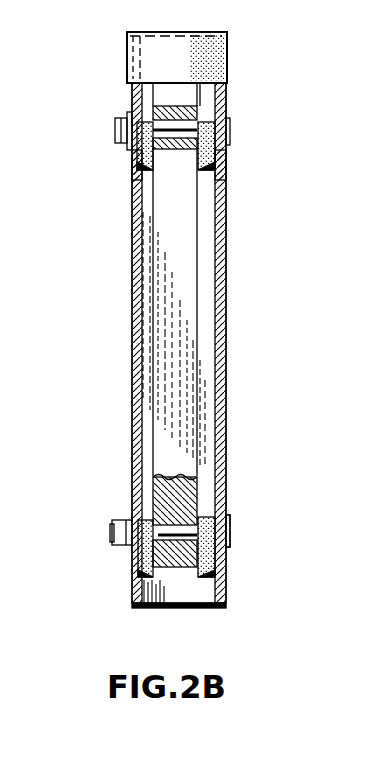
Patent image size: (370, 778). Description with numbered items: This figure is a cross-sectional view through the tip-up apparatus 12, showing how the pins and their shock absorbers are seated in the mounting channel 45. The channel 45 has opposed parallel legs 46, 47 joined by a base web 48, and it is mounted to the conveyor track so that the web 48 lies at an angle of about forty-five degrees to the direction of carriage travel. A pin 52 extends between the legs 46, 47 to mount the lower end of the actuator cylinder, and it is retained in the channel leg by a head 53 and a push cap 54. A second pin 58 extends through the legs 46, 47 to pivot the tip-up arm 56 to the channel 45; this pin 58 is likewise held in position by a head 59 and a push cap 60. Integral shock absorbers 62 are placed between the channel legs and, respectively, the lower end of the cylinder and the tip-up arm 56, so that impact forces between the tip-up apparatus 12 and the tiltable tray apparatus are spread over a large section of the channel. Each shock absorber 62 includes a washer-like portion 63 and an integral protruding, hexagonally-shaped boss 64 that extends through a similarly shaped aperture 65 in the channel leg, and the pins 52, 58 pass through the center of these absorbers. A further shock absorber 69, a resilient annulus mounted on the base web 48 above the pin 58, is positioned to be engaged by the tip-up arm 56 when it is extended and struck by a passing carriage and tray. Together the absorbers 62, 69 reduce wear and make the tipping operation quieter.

The tip-up apparatus 12 is at (80, 599).
The mounting channel 45 is at (128, 339).
The channel leg 46 is at (136, 368).
The channel leg 47 is at (222, 365).
The base web 48 is at (186, 326).
The pin 52 is at (177, 532).
The head 53 is at (227, 537).
The push cap 54 is at (112, 545).
The tip-up arm 56 is at (178, 162).
The pin 58 is at (197, 117).
The head 59 is at (227, 145).
The push cap 60 is at (117, 147).
The shock absorber 62 is at (140, 192).
The washer-like portion 63 is at (205, 92).
The hexagonally-shaped boss 64 is at (226, 120).
The aperture 65 is at (220, 173).
The shock absorber 69 is at (175, 50).